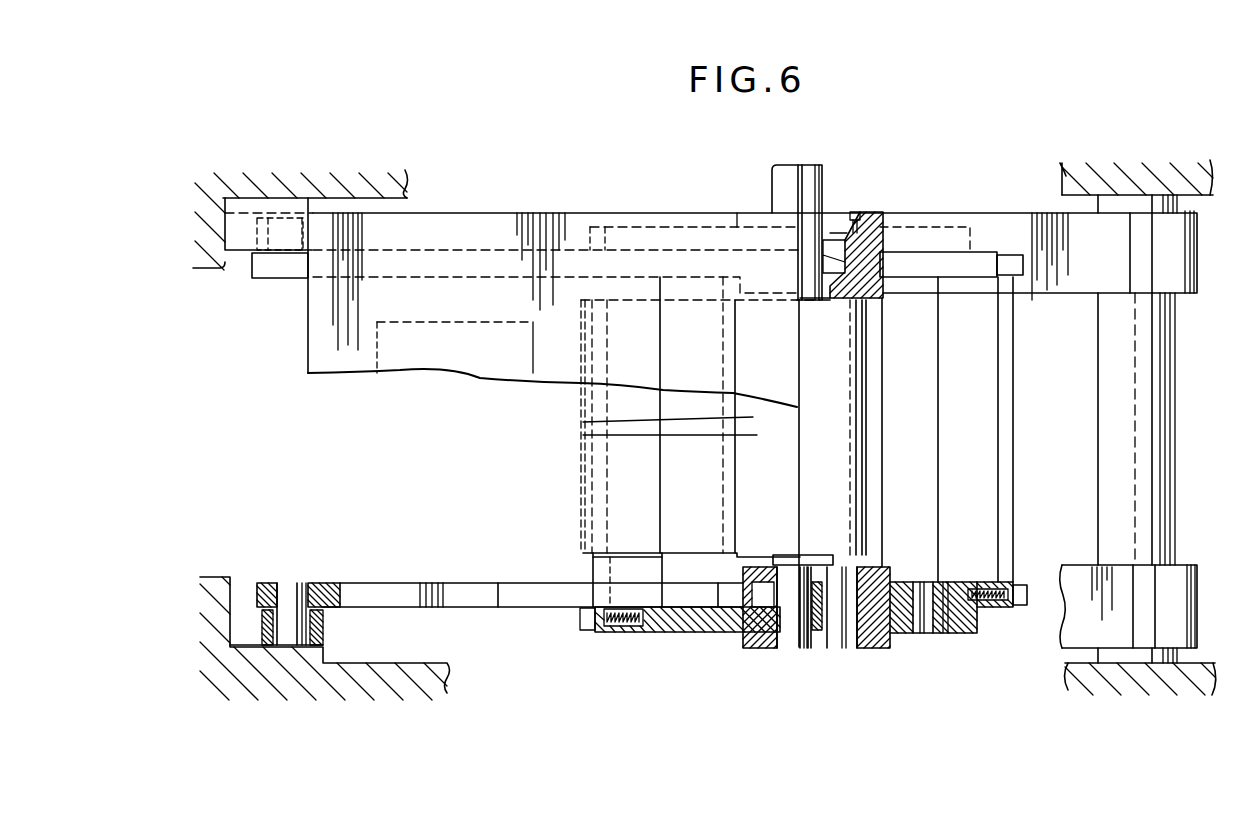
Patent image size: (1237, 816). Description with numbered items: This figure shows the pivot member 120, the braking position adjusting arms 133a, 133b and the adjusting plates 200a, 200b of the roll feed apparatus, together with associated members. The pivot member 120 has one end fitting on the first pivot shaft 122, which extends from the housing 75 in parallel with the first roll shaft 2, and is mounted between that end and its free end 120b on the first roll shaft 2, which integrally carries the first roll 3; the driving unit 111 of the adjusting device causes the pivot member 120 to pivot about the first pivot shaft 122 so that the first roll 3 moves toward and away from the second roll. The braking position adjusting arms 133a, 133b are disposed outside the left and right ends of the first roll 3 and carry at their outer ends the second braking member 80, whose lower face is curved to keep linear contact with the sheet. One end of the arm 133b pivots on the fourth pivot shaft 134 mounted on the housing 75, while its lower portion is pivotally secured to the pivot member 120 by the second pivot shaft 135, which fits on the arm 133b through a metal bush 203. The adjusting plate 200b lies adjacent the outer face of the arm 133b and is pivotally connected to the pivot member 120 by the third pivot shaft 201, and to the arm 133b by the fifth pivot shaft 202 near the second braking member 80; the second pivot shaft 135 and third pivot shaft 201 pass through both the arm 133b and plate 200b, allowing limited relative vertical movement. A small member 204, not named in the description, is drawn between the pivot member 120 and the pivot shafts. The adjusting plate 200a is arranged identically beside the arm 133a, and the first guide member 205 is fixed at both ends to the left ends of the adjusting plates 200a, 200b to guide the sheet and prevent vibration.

The first roll shaft 2 is at (820, 193).
The first roll 3 is at (860, 383).
The housing 75 is at (230, 662).
The second braking member 80 is at (983, 393).
The driving unit 111 is at (437, 373).
The pivot member 120 is at (1018, 223).
The free end of pivot member 120b is at (327, 363).
The first pivot shaft 122 is at (1160, 500).
The braking position adjusting arm 133a is at (262, 272).
The braking position adjusting arm 133b is at (482, 608).
The fourth pivot shaft 134 is at (288, 588).
The second pivot shaft 135 is at (835, 640).
The adjusting plate 200a is at (933, 235).
The adjusting plate 200b is at (660, 627).
The third pivot shaft 201 is at (788, 640).
The fifth pivot shaft 202 is at (920, 627).
The metal bush 203 is at (885, 593).
The tab 204 is at (818, 573).
The first guide member 205 is at (617, 565).